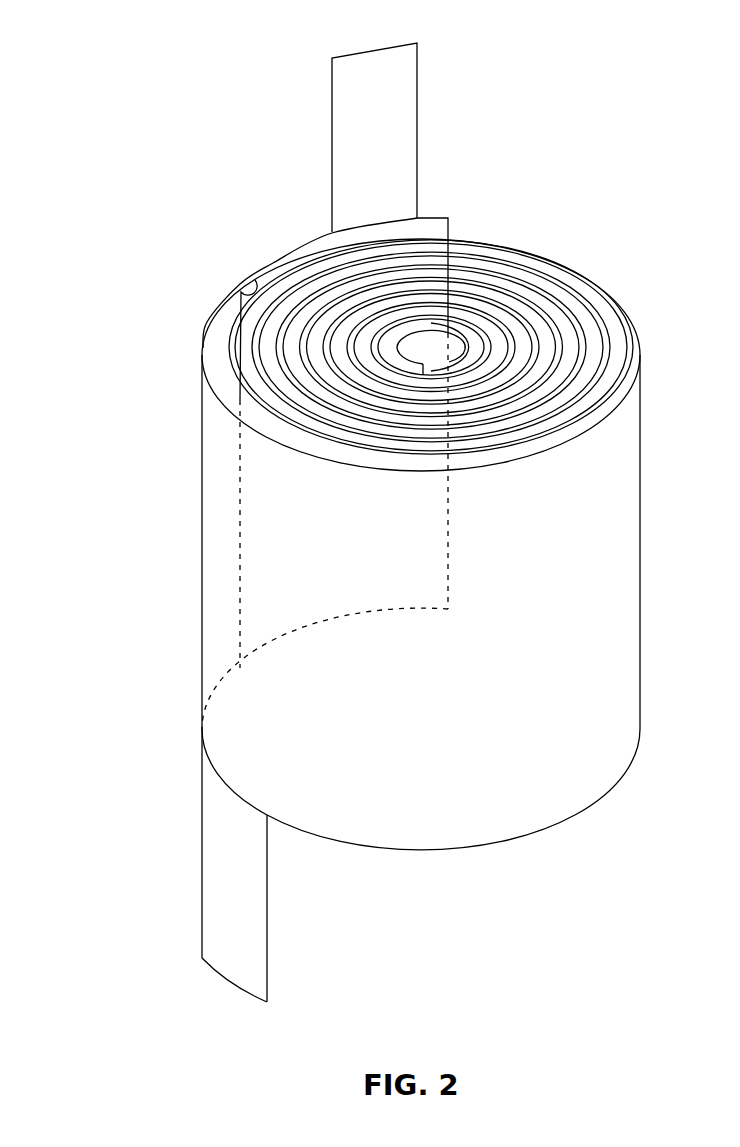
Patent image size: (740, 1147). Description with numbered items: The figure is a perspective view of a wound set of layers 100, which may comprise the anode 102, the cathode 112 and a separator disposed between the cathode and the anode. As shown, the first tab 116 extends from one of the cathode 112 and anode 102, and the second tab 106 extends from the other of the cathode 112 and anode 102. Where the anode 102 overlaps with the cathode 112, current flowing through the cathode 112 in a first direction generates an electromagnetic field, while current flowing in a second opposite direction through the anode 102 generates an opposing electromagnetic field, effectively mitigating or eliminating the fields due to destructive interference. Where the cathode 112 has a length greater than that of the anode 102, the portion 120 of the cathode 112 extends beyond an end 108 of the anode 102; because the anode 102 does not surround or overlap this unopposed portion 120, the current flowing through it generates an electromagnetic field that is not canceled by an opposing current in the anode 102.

The wound set of layers 100 is at (90, 29).
The anode 102 is at (220, 452).
The cathode 112 is at (360, 598).
The second tab 106 is at (225, 917).
The first tab 116 is at (353, 175).
The end of the anode 108 is at (255, 280).
The portion of the cathode 120 is at (273, 262).